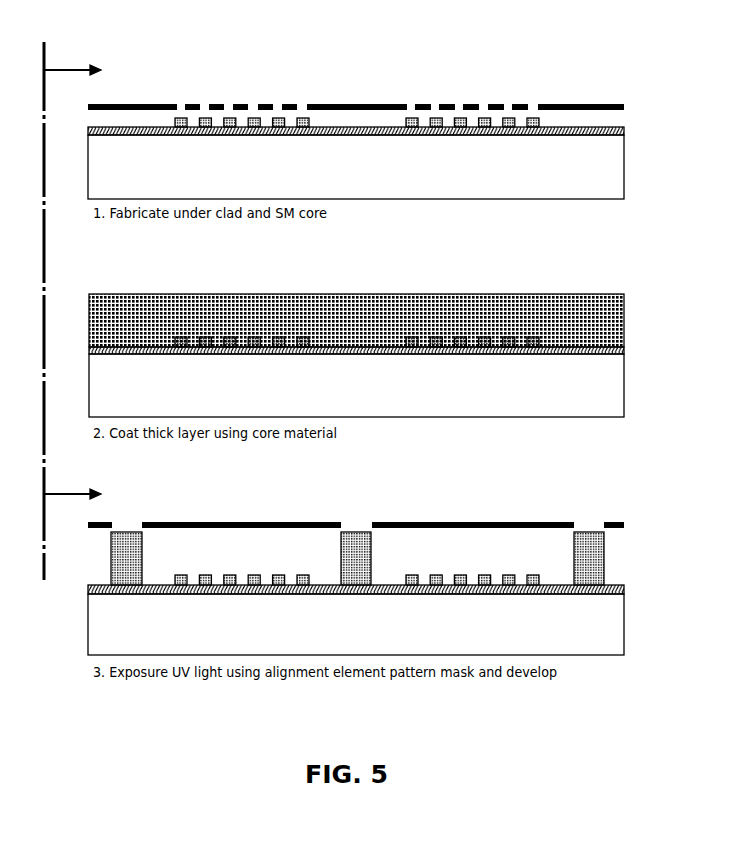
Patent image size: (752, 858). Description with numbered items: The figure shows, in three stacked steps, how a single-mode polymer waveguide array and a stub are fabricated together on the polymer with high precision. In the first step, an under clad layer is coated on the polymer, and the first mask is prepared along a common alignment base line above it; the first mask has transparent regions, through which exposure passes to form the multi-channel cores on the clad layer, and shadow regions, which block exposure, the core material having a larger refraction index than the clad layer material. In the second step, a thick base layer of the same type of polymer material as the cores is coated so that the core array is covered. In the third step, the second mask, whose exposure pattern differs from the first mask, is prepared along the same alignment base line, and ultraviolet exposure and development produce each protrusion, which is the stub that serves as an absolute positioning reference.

The first mask the first mask is at (567, 103).
The element transparent is at (183, 101).
The element shadow is at (337, 103).
The under clad layer is at (625, 127).
The element polymer is at (624, 192).
The second mask the second mask is at (557, 502).
The element protrusion is at (605, 546).